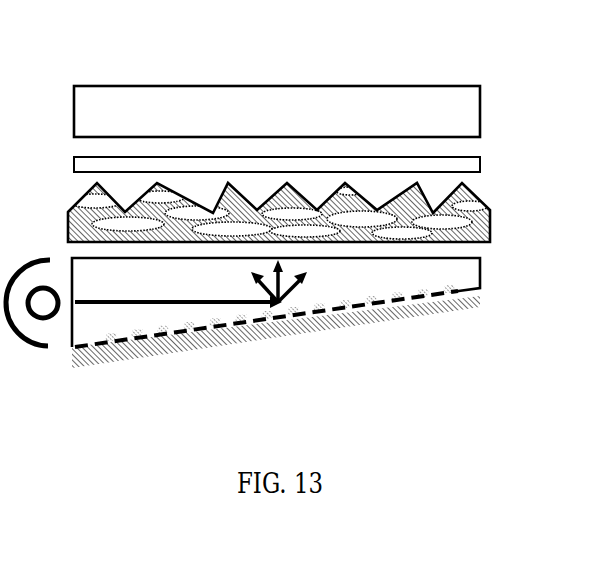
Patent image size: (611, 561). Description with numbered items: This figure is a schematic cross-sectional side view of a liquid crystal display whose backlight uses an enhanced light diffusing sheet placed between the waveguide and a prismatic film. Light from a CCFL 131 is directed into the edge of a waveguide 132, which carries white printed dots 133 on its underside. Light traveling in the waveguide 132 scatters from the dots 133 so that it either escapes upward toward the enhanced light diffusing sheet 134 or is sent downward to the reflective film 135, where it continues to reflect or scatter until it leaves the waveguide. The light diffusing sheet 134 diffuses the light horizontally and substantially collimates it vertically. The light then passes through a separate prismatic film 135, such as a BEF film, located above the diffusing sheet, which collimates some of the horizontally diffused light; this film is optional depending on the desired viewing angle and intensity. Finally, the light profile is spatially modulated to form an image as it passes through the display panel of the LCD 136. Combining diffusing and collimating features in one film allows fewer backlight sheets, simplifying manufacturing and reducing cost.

The CCFL 131 is at (45, 312).
The waveguide 132 is at (470, 278).
The white printed dots 133 is at (452, 288).
The enhanced light diffusing sheet 134 is at (486, 218).
The reflective film 135 is at (466, 164).
The LCD 136 is at (478, 107).